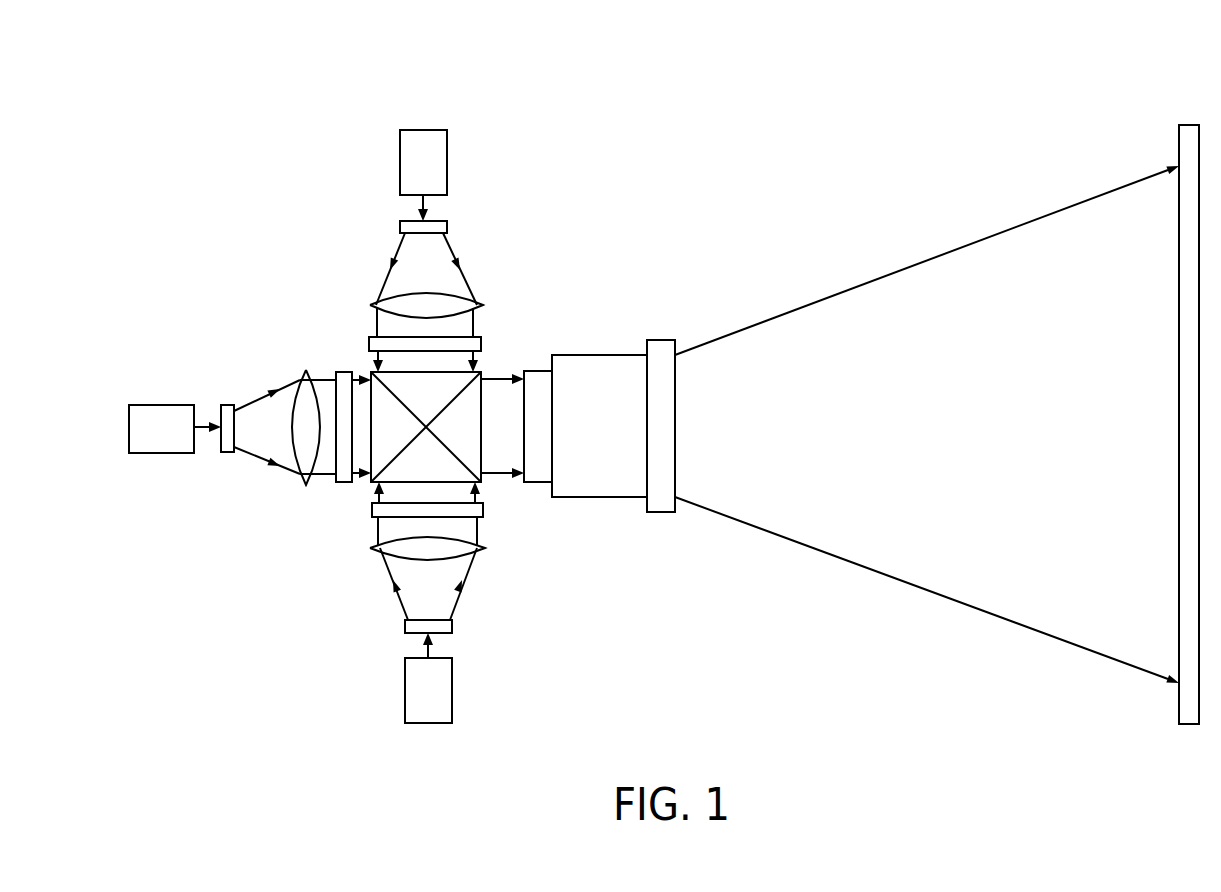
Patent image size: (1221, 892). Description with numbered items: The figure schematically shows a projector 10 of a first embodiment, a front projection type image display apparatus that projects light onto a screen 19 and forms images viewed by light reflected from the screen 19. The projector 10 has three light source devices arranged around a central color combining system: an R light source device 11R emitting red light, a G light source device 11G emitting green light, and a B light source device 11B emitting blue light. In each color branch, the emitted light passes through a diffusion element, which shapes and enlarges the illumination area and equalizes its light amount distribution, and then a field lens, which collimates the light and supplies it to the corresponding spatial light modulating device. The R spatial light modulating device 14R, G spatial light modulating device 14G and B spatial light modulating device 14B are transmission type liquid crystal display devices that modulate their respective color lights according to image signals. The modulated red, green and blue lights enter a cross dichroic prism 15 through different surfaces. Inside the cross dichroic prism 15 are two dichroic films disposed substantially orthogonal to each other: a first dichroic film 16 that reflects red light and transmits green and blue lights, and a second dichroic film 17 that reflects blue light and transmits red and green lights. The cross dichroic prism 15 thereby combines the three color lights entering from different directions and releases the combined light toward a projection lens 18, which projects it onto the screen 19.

The projector 10 is at (272, 92).
The R light source device 11R is at (437, 148).
The G light source device 11G is at (147, 408).
The B light source device 11B is at (415, 696).
The R spatial light modulating device 14R is at (482, 340).
The G spatial light modulating device 14G is at (345, 372).
The B spatial light modulating device 14B is at (378, 516).
The cross dichroic prism 15 is at (356, 495).
The first dichroic film 16 is at (468, 476).
The second dichroic film 17 is at (463, 393).
The projection lens 18 is at (660, 348).
The screen 19 is at (1190, 130).